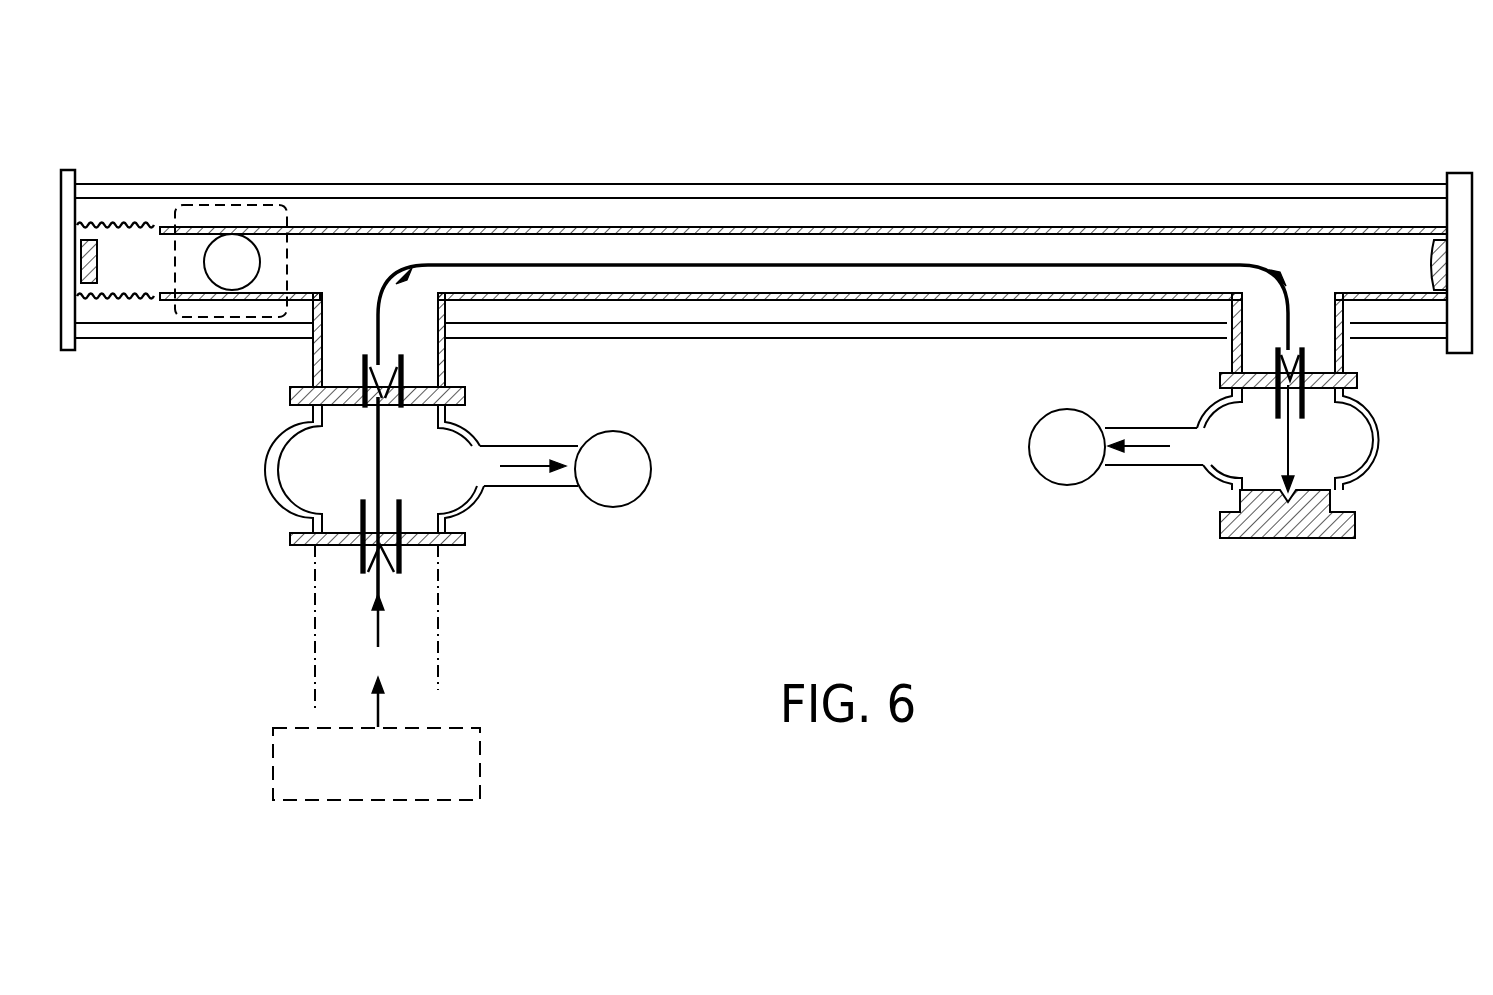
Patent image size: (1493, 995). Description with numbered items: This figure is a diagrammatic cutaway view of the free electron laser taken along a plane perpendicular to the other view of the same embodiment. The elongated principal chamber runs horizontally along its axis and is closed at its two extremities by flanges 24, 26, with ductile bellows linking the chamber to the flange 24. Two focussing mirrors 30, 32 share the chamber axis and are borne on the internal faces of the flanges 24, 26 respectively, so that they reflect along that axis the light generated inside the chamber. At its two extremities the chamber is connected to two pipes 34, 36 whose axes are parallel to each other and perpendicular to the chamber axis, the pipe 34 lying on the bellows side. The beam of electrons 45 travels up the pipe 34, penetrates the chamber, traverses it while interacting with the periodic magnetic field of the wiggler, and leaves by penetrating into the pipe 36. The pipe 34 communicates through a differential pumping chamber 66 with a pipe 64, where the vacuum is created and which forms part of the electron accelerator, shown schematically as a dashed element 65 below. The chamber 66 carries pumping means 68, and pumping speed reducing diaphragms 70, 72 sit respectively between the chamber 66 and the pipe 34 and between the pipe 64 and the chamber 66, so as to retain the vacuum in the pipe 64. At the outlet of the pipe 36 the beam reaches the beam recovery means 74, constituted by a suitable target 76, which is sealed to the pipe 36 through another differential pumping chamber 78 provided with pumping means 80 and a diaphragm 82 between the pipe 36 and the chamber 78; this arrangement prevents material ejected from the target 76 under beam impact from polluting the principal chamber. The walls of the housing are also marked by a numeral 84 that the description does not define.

The flange 24 is at (66, 170).
The flange 26 is at (1458, 172).
The focussing mirror 30 is at (98, 268).
The focussing mirror 32 is at (1430, 255).
The pipe 34 is at (312, 348).
The pipe 36 is at (1355, 355).
The beam of electrons 45 is at (497, 262).
The pipe 64 is at (437, 660).
The supply source 65 is at (480, 770).
The differential pumping chamber 66 is at (265, 488).
The pumping means 68 is at (625, 492).
The pumping speed reducing diaphragm 70 is at (405, 365).
The pumping speed reducing diaphragm 72 is at (356, 557).
The beam recovery means 74 is at (1378, 537).
The target 76 is at (1250, 540).
The differential pumping chamber 78 is at (1392, 462).
The pumping means 80 is at (1068, 480).
The pumping speed reducing diaphragm 82 is at (1268, 345).
The housing tube 84 is at (333, 193).